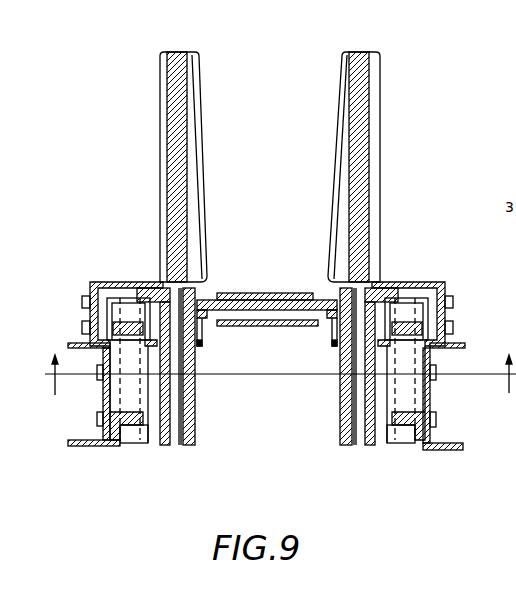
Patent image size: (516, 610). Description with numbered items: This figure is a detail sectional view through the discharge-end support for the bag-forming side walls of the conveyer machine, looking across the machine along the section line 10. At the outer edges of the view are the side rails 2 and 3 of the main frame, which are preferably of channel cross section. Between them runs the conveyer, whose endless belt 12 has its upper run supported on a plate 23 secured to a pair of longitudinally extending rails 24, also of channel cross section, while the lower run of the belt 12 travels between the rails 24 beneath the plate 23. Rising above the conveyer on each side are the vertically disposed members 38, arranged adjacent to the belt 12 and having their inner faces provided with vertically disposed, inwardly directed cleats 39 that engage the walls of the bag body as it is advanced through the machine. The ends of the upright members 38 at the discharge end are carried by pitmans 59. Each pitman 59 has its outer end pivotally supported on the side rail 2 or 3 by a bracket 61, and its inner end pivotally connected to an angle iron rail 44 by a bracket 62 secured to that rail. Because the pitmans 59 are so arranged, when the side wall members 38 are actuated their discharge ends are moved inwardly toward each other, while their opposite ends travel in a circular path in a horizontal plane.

The side rail 2 is at (458, 451).
The side rail 3 is at (71, 447).
The section line 10- 10 is at (279, 385).
The endless belt 12 is at (262, 320).
The plate 23 is at (283, 302).
The longitudinally extending rails 24 is at (330, 331).
The vertically disposed members 38 is at (172, 52).
The cleats 39 is at (337, 158).
The angle iron rails 44 is at (96, 281).
The pitmans 59 is at (196, 394).
The brackets 61 is at (115, 446).
The brackets 62 is at (148, 288).